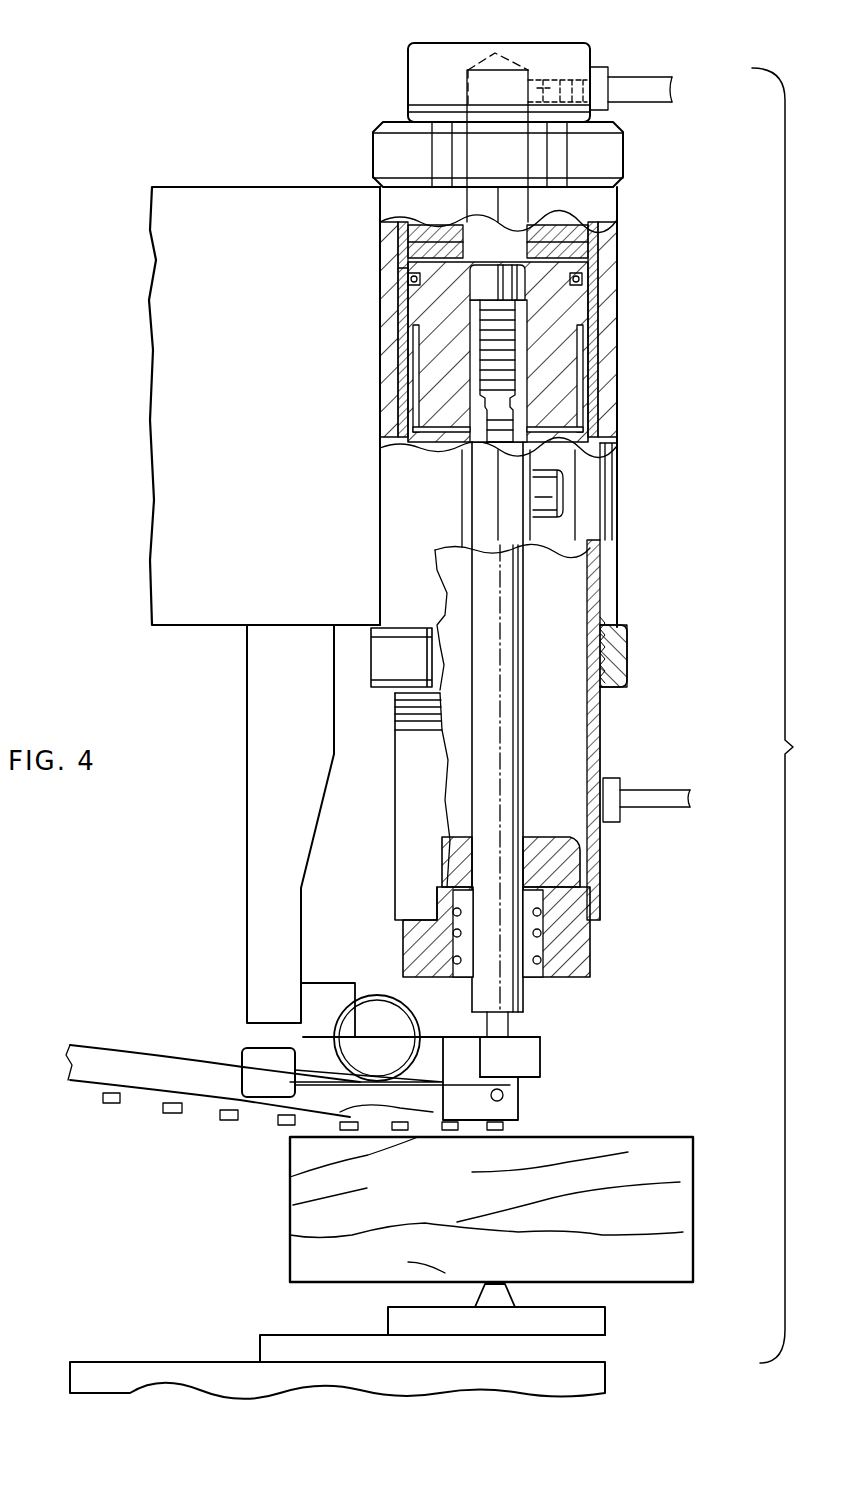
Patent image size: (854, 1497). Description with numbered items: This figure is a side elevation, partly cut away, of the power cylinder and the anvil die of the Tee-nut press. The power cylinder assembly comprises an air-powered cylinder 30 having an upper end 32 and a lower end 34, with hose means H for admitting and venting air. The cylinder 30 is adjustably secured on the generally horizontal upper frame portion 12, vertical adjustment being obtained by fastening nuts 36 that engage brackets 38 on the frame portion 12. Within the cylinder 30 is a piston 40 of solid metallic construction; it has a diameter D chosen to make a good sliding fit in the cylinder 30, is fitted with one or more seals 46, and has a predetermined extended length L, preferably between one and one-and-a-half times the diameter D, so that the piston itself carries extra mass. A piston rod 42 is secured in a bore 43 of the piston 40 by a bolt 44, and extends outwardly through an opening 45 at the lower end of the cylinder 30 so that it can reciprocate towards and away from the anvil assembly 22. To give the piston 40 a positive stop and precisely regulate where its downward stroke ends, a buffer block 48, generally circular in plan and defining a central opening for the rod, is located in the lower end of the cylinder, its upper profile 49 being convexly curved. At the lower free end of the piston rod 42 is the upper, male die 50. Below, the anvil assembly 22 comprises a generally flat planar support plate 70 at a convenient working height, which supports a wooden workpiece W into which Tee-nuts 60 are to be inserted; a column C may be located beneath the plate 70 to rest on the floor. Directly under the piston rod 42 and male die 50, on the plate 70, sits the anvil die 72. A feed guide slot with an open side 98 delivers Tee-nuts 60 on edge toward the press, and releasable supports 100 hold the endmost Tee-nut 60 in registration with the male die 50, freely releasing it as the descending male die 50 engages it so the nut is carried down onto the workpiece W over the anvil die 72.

The horizontal frame portion 12 is at (247, 421).
The anvil assembly 22 is at (625, 1306).
The cylinder 30 is at (610, 363).
The upper end 32 is at (612, 88).
The lower end 34 is at (590, 940).
The fastening nuts 36 is at (390, 155).
The brackets 38 is at (415, 495).
The piston 40 is at (545, 315).
The piston rod 42 is at (517, 600).
The bore 43 is at (488, 397).
The bolt 44 is at (480, 348).
The opening 45 is at (532, 988).
The seals 46 is at (408, 276).
The buffer block 48 is at (553, 860).
The upper profile 49 is at (543, 837).
The male die 50 is at (530, 1024).
The Tee-nut 60 is at (172, 1113).
The support plate 70 is at (295, 1345).
The anvil die 72 is at (382, 1310).
The open side 98 is at (228, 1120).
The releasable supports 100 is at (530, 1100).
The column C is at (578, 1377).
The diameter D is at (405, 302).
The hose means H is at (648, 77).
The extended length L is at (600, 243).
The workpiece W is at (653, 1165).